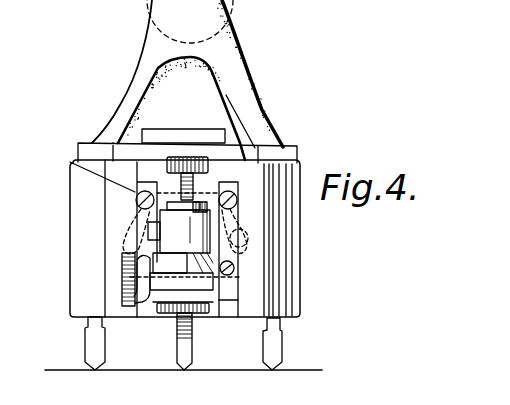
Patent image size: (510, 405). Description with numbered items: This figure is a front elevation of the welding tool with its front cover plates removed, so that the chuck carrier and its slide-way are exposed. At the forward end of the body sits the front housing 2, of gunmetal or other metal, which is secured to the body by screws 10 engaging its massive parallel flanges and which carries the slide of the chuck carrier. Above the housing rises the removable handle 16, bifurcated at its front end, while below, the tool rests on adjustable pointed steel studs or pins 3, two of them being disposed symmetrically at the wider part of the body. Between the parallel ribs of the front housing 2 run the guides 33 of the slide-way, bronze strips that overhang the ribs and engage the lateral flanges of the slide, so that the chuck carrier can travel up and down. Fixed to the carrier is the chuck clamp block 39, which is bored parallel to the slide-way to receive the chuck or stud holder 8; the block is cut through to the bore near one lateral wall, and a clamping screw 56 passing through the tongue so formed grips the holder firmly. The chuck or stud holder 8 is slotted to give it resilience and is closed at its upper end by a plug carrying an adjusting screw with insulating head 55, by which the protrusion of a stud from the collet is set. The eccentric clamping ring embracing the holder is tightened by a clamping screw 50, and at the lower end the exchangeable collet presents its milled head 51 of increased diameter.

The front housing 2 is at (299, 267).
The adjustable pointed studs or pins 3 is at (85, 348).
The chuck or stud holder 8 is at (240, 258).
The screws 10 is at (503, 6).
The removable handle 16 is at (153, 42).
The guides of the slide-way 33 is at (138, 194).
The chuck clamp block 39 is at (153, 240).
The clamping screw 50 is at (122, 295).
The collet head 51 is at (165, 313).
The insulating head 55 is at (202, 129).
The clamping screw 56 is at (148, 228).